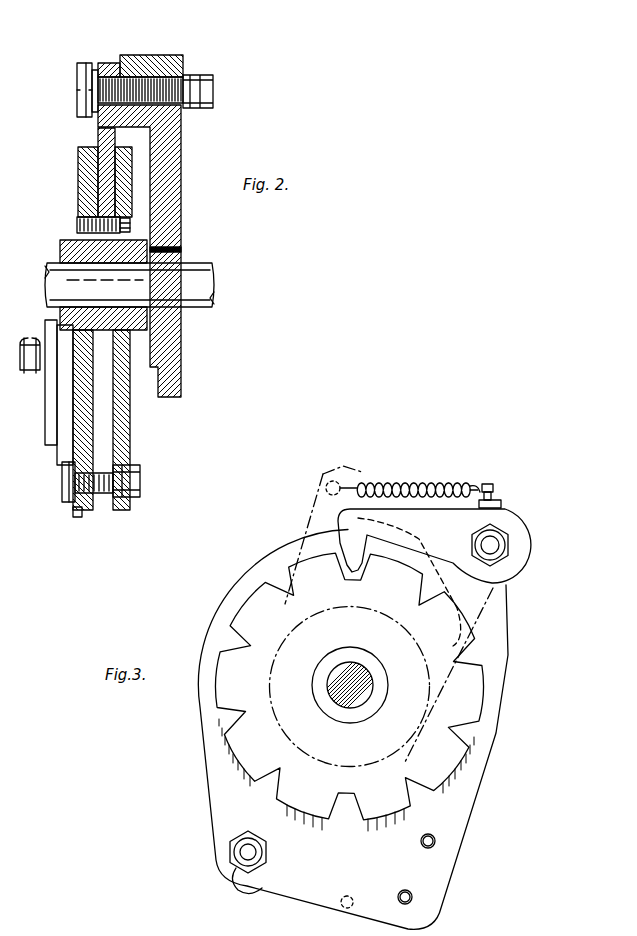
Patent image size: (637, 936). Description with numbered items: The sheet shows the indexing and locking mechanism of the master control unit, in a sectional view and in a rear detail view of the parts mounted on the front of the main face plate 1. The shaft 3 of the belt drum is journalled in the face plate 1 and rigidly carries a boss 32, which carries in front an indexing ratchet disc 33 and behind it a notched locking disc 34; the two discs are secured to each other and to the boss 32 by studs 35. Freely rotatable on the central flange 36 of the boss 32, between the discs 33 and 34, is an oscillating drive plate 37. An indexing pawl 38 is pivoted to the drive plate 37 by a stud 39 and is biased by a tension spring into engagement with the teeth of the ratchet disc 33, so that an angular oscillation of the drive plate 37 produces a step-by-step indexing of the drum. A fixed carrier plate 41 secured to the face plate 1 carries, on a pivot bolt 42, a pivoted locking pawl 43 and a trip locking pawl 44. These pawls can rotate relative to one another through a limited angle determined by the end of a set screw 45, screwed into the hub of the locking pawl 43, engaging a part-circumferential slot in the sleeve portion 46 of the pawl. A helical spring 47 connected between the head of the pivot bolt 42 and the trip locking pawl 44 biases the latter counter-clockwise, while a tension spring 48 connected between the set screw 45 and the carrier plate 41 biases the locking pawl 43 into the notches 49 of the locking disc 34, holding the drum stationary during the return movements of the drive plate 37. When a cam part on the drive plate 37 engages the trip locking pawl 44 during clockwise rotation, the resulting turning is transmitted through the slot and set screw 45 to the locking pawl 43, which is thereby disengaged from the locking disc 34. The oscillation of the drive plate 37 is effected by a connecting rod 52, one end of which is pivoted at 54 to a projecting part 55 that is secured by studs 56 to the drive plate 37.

In FIG. 2, the main face plate 1 is at (170, 230).
In FIG. 2, the shaft 3 is at (202, 272).
In FIG. 3, the shaft 3 is at (365, 688).
In FIG. 2, the boss 32 is at (55, 272).
In FIG. 2, the indexing ratchet disc 33 is at (80, 160).
In FIG. 2, the notched locking disc 34 is at (120, 180).
In FIG. 3, the notched locking disc 34 is at (477, 682).
In FIG. 2, the studs 35 is at (92, 250).
In FIG. 2, the central flange 36 is at (95, 222).
In FIG. 2, the oscillating drive plate 37 is at (105, 136).
In FIG. 3, the oscillating drive plate 37 is at (503, 727).
In FIG. 2, the indexing pawl 38 is at (68, 472).
In FIG. 2, the stud 39 is at (67, 494).
In FIG. 3, the stud 39 is at (235, 855).
In FIG. 2, the fixed carrier plate 41 is at (165, 60).
In FIG. 3, the fixed carrier plate 41 is at (388, 482).
In FIG. 2, the pivot bolt 42 is at (77, 94).
In FIG. 3, the pivot bolt 42 is at (510, 537).
In FIG. 2, the locking pawl 43 is at (140, 56).
In FIG. 3, the locking pawl 43 is at (407, 517).
In FIG. 2, the trip locking pawl 44 is at (106, 66).
In FIG. 3, the set screw 45 is at (487, 484).
In FIG. 2, the sleeve portion 46 is at (190, 76).
In FIG. 2, the helical spring 47 is at (95, 70).
In FIG. 3, the tension spring 48 is at (466, 485).
In FIG. 3, the notches 49 is at (485, 718).
In FIG. 2, the connecting rod 52 is at (50, 413).
In FIG. 2, the pivot 54 is at (30, 373).
In FIG. 2, the projecting part 55 is at (63, 437).
In FIG. 3, the studs 56 is at (412, 892).